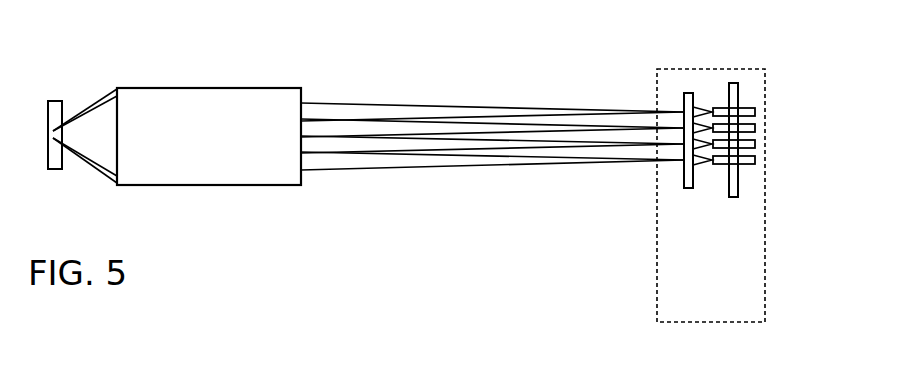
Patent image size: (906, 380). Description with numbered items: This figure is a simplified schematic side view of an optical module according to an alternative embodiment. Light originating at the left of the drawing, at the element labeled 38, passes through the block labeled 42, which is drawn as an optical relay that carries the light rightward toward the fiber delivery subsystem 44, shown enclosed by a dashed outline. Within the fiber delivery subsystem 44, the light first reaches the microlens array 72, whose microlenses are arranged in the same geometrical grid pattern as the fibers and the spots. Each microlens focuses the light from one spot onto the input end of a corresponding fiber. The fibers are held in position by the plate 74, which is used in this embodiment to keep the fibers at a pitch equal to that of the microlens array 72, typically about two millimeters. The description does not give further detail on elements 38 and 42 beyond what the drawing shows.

The light source / fiber array 38 is at (55, 170).
The optical relay 42 is at (221, 186).
The fiber delivery subsystem 44 is at (719, 68).
The microlens array 72 is at (689, 189).
The plate 74 is at (733, 198).